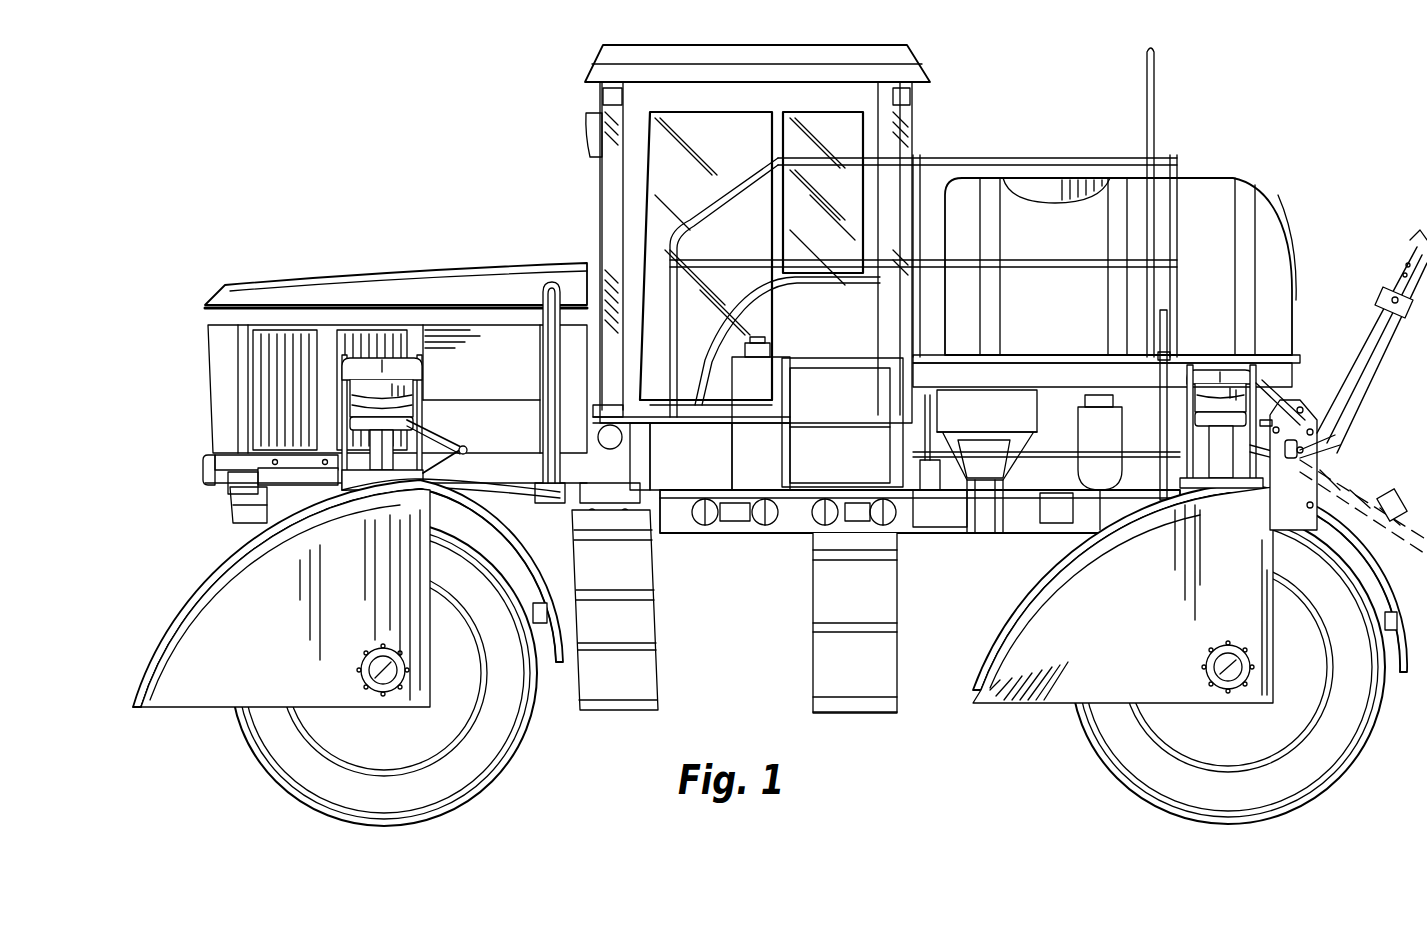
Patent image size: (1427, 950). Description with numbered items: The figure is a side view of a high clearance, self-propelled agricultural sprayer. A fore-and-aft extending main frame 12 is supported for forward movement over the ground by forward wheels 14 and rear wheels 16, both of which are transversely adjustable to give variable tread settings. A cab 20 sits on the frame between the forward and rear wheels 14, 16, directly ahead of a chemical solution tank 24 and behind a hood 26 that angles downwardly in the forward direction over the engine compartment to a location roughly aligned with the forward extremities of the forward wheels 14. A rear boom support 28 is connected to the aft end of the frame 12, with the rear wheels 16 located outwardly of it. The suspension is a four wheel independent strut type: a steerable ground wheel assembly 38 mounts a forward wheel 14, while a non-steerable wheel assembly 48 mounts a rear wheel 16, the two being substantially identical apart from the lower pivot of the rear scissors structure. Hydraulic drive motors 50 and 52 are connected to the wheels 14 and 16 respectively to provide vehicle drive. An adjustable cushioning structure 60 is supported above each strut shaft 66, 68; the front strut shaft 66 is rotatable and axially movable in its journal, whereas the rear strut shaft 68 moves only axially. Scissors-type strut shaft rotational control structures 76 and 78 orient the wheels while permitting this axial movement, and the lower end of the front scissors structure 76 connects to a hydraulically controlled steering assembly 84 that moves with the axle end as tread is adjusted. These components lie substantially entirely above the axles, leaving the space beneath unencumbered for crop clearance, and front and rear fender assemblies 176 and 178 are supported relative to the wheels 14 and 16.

The main frame 12 is at (1012, 545).
The forward wheels 14 is at (497, 740).
The rear wheels 16 is at (1107, 730).
The cab 20 is at (932, 74).
The chemical solution tank 24 is at (1207, 178).
The hood 26 is at (412, 292).
The rear boom support 28 is at (1366, 278).
The steerable ground wheel assembly 38 is at (797, 395).
The non-steerable wheel assembly 48 is at (1262, 380).
The hydraulic drive motor 50 is at (360, 672).
The hydraulic drive motor 52 is at (1206, 665).
The adjustable cushioning structure 60 is at (408, 382).
The strut shaft 66 is at (440, 470).
The strut shaft 68 is at (1265, 470).
The scissors-type strut shaft rotational control structure 76 is at (468, 445).
The scissors-type strut shaft rotational control structure 78 is at (1335, 470).
The hydraulically controlled steering assembly 84 is at (225, 495).
The front fender assembly 176 is at (220, 567).
The rear fender assembly 178 is at (1035, 598).